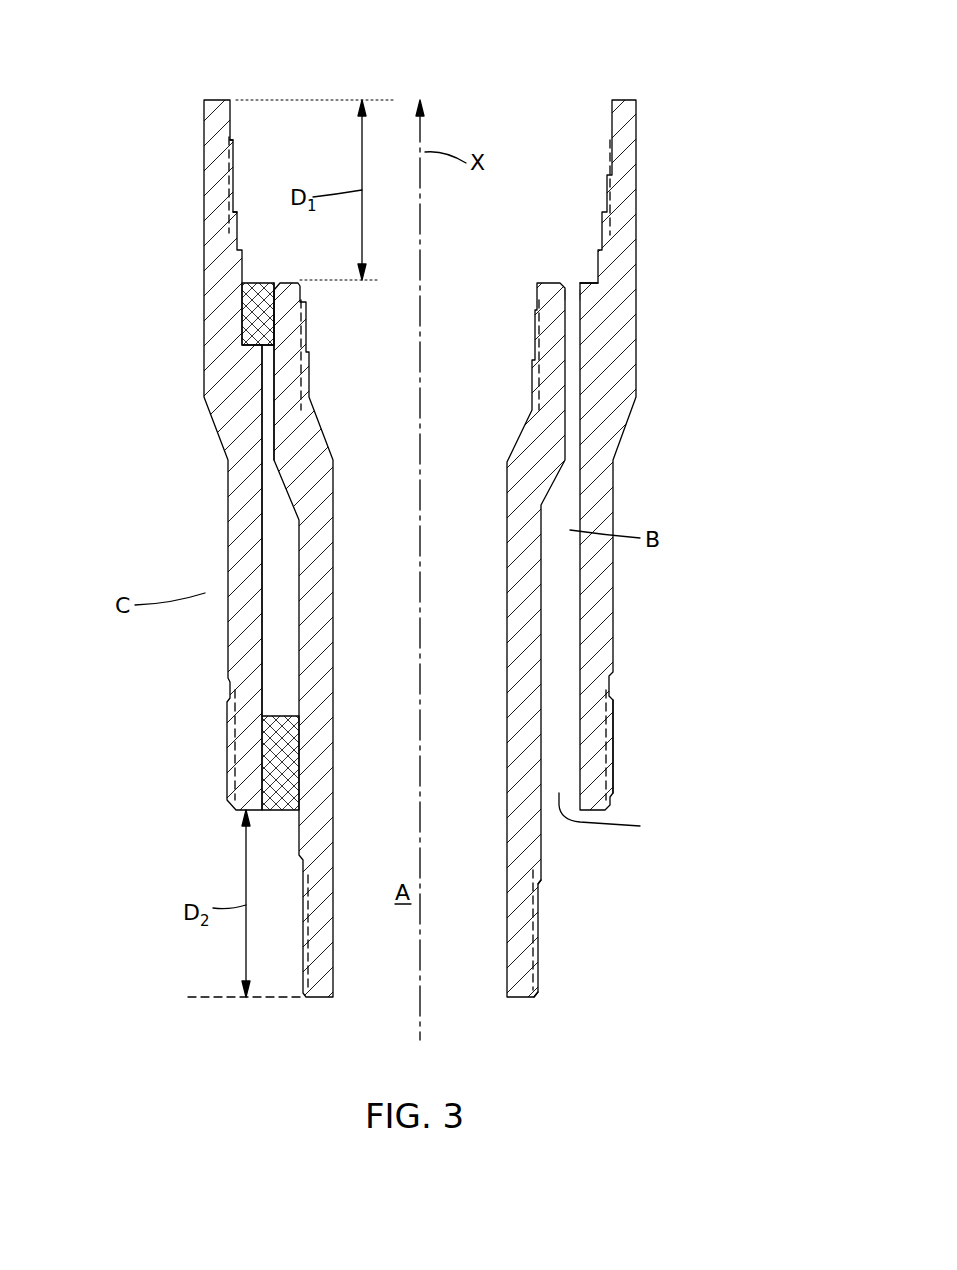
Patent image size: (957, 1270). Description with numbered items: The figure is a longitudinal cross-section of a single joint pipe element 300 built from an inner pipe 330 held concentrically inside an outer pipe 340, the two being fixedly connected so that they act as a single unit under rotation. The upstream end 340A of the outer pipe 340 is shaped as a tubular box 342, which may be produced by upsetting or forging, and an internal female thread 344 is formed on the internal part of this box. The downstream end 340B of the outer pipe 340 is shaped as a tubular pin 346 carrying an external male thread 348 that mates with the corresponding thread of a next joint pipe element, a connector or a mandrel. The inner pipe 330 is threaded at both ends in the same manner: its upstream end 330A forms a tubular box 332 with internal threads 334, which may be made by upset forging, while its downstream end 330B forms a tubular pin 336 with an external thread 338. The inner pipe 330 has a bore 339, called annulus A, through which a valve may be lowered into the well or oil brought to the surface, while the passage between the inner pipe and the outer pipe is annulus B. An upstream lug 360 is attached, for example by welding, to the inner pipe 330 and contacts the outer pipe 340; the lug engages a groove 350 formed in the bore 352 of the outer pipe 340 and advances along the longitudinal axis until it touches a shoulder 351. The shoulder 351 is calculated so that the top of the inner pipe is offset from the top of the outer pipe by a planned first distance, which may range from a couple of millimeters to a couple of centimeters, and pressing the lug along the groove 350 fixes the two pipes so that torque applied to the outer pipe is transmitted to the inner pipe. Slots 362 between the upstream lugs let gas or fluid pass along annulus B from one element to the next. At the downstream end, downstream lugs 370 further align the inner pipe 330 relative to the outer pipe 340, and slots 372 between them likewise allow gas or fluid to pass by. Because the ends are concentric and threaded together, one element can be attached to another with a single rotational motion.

The single joint pipe element 300 is at (749, 42).
The inner pipe 330 is at (530, 597).
The upstream end of the inner pipe 330A is at (558, 343).
The downstream end of the inner pipe 330B is at (522, 995).
The tubular box 332 is at (553, 372).
The internal threads 334 is at (530, 358).
The tubular pin 336 is at (537, 880).
The external thread 338 is at (540, 940).
The bore 339 is at (412, 779).
The outer pipe 340 is at (225, 548).
The upstream end of the outer pipe 340A is at (198, 156).
The downstream end of the outer pipe 340B is at (211, 740).
The tubular box 342 is at (644, 172).
The internal thread 344 is at (232, 157).
The tubular pin 346 is at (620, 787).
The external thread 348 is at (603, 720).
The groove 350 is at (245, 338).
The shoulder 351 is at (256, 348).
The bore of the outer pipe 352 is at (268, 482).
The upstream lug 360 is at (245, 310).
The slots 362 is at (572, 305).
The downstream lug 370 is at (285, 814).
The slots 372 is at (607, 832).